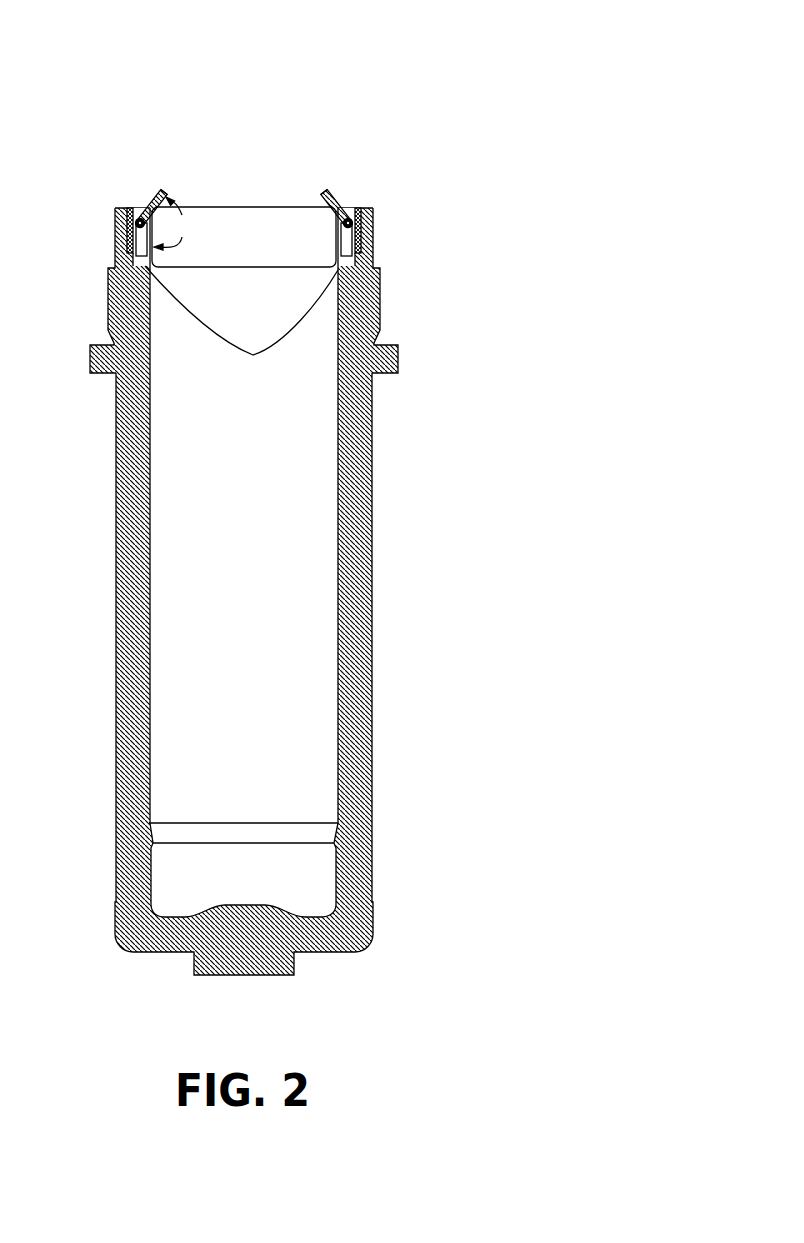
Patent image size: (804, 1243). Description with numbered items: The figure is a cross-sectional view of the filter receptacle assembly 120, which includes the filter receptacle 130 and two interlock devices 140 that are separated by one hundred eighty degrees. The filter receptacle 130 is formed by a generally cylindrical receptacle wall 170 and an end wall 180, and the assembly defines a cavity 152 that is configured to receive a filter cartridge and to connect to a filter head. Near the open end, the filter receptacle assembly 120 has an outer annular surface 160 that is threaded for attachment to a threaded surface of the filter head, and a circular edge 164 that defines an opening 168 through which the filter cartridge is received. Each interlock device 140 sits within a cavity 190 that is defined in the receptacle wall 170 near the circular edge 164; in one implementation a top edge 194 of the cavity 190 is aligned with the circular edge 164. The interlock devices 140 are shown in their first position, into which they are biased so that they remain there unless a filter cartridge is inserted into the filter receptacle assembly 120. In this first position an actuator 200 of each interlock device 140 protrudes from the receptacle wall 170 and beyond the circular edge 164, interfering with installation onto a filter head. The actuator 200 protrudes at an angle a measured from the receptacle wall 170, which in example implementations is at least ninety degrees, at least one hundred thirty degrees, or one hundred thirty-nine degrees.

The filter receptacle assembly 120 is at (364, 72).
The filter receptacle 130 is at (372, 533).
The interlock device 140 is at (140, 185).
The cavity 152 is at (320, 763).
The outer annular surface 160 is at (378, 308).
The circular edge 164 is at (124, 208).
The opening 168 is at (208, 205).
The receptacle wall 170 is at (148, 637).
The end wall 180 is at (197, 910).
The cavity 190 is at (241, 326).
The top edge 194 is at (362, 207).
The actuator 200 is at (159, 195).